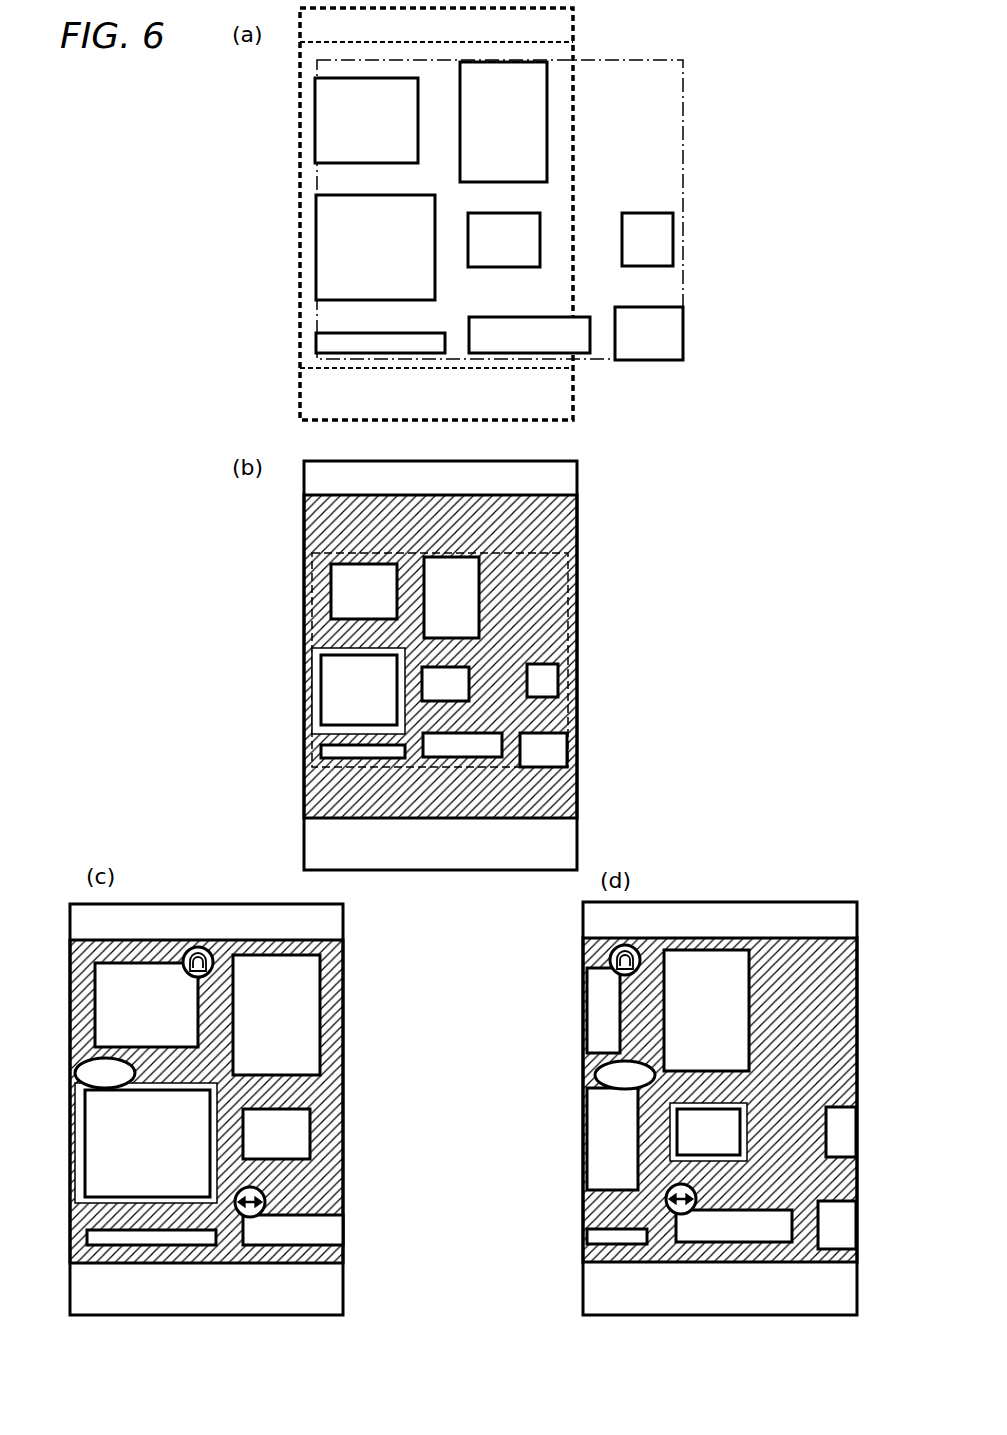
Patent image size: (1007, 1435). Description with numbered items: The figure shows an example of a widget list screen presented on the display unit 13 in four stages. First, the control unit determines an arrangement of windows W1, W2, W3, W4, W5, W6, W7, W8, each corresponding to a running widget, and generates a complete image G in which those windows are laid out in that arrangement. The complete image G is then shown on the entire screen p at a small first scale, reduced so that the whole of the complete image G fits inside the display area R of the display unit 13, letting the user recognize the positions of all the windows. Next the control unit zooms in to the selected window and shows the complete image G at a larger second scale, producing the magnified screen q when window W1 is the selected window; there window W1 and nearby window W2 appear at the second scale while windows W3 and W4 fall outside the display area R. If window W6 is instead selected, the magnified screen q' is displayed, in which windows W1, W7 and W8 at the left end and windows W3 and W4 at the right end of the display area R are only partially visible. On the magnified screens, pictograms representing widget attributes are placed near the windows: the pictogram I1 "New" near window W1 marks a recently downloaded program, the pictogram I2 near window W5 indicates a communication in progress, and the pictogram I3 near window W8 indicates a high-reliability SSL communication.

The display unit 13 is at (573, 27).
The complete image G is at (683, 105).
The display area R is at (457, 818).
The entire screen p is at (624, 571).
The magnified screen q is at (242, 1109).
The magnified screen q' is at (676, 1108).
The pictogram I1 is at (78, 1062).
The pictogram I2 is at (268, 1200).
The pictogram I3 is at (200, 946).
The window W1 is at (356, 699).
The window W2 is at (491, 568).
The window W3 is at (688, 778).
The window W4 is at (691, 685).
The window W5 is at (517, 781).
The window W6 is at (495, 687).
The window W7 is at (367, 792).
The window W8 is at (357, 565).